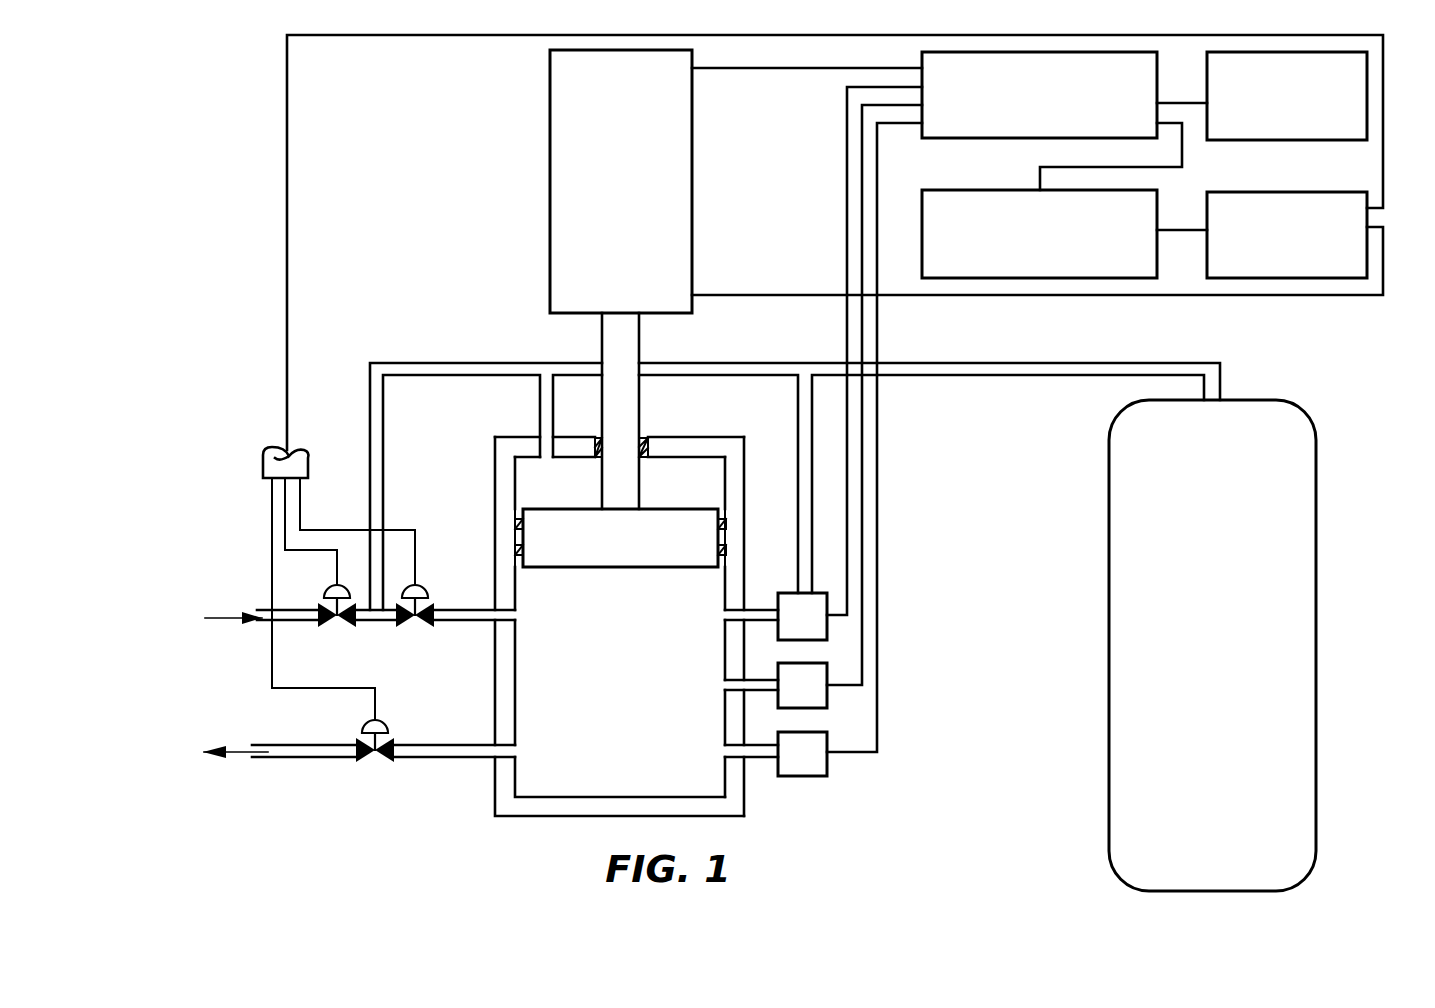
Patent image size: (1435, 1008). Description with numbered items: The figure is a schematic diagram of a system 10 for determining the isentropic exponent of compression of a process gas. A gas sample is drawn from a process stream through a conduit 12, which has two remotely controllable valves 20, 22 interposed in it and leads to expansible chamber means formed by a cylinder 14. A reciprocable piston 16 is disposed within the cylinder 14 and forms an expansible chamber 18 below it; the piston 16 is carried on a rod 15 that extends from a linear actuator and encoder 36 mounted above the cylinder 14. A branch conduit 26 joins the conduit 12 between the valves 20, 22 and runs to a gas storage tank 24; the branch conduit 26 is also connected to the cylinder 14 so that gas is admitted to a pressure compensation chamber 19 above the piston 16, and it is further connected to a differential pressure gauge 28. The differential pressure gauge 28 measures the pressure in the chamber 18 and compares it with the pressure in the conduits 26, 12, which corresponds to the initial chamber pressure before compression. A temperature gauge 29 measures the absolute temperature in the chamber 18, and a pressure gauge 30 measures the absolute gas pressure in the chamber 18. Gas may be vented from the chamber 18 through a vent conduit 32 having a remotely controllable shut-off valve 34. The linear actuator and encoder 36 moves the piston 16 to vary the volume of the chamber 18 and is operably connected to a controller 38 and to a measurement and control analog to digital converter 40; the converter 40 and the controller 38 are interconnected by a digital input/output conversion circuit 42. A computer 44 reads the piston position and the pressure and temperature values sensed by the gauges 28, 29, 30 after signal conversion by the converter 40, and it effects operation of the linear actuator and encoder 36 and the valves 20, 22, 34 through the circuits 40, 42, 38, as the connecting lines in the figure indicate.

The system 10 is at (1375, 328).
The conduit 12 is at (262, 610).
The cylinder 14 is at (745, 470).
The piston rod 15 is at (640, 400).
The piston 16 is at (618, 567).
The expansible chamber 18 is at (607, 706).
The pressure compensation chamber 19 is at (670, 495).
The valve 20 is at (348, 626).
The valve 22 is at (426, 626).
The gas storage tank 24 is at (1316, 712).
The branch conduit 26 is at (422, 362).
The differential pressure gauge 28 is at (790, 593).
The temperature gauge 29 is at (815, 708).
The pressure gauge 30 is at (807, 777).
The vent conduit 32 is at (436, 758).
The shut-off valve 34 is at (364, 764).
The linear actuator and encoder 36 is at (550, 113).
The controller 38 is at (1307, 192).
The measurement and control A/D converter 40 is at (947, 138).
The digital input/output conversion circuit 42 is at (970, 190).
The computer 44 is at (1245, 140).